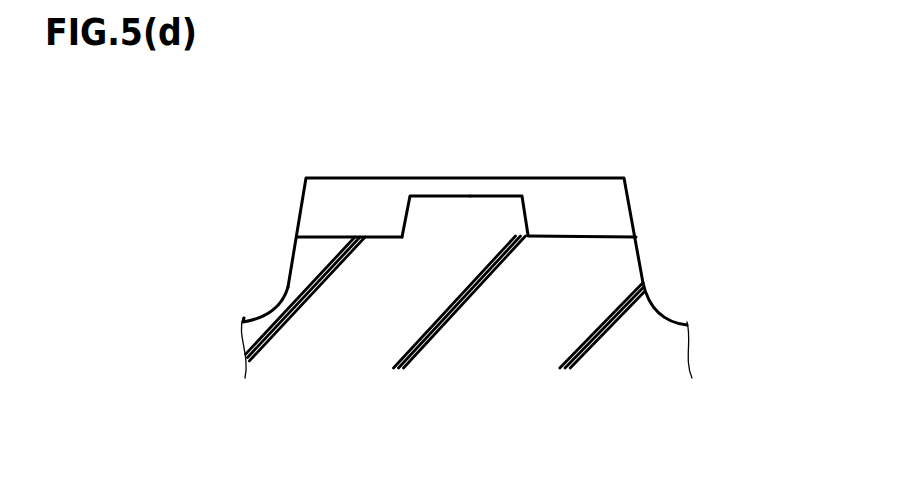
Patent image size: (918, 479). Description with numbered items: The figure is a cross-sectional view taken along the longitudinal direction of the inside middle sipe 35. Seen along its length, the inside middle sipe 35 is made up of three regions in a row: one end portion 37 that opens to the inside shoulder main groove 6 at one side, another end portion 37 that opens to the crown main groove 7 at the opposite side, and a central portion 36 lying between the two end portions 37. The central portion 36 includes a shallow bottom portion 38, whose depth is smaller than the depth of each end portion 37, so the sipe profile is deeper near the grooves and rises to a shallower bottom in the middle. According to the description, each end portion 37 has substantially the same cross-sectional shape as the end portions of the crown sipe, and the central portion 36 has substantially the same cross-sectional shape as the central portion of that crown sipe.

The inside shoulder main groove 6 is at (675, 295).
The crown main groove 7 is at (254, 297).
The inside middle sipe 35 is at (541, 176).
The central portion 36 is at (482, 176).
The end portion 37 is at (348, 206).
The shallow bottom portion 38 is at (443, 177).